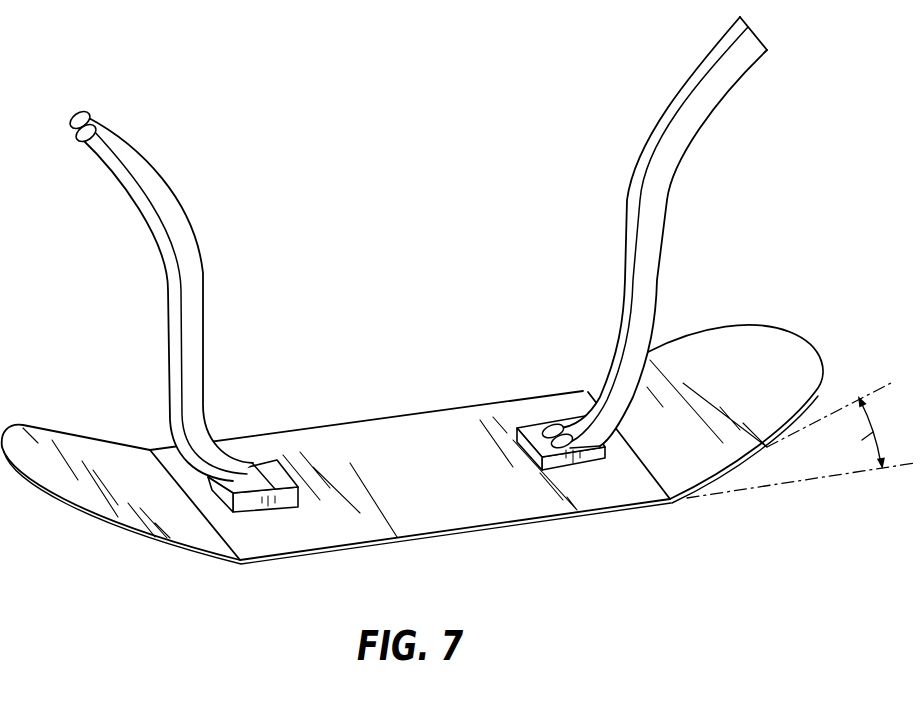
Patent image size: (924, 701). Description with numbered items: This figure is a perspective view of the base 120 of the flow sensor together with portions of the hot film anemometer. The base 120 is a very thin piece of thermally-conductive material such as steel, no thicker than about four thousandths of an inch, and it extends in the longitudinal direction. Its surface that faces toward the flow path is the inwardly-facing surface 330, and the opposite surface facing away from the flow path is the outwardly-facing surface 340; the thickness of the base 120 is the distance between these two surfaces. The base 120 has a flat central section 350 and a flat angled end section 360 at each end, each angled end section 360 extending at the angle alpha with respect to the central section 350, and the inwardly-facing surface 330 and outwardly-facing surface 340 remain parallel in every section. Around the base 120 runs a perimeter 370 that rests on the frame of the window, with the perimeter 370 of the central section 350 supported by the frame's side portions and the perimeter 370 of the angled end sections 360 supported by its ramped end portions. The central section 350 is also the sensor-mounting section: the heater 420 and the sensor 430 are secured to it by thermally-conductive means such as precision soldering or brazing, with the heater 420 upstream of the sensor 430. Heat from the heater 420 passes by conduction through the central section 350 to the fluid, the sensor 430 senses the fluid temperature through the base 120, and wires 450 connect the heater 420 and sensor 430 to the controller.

The base 120 is at (458, 331).
The inwardly-facing surface 330 is at (455, 530).
The outwardly-facing surface 340 is at (448, 481).
The central section 350 is at (367, 447).
The angled end section 360 is at (78, 446).
The perimeter 370 is at (417, 412).
The heater 420 is at (283, 478).
The sensor 430 is at (528, 430).
The wires 450 is at (167, 200).